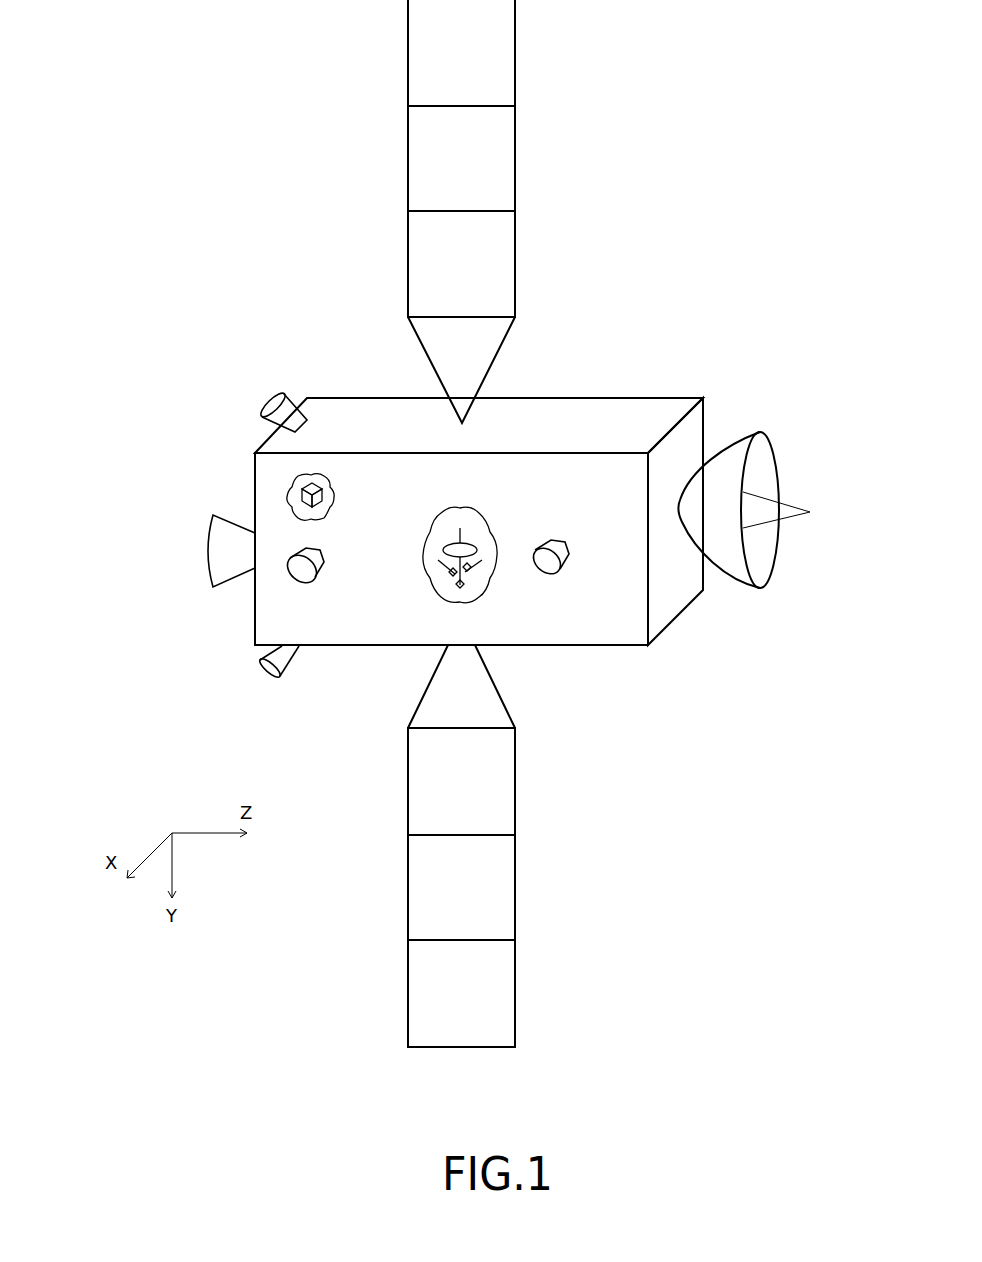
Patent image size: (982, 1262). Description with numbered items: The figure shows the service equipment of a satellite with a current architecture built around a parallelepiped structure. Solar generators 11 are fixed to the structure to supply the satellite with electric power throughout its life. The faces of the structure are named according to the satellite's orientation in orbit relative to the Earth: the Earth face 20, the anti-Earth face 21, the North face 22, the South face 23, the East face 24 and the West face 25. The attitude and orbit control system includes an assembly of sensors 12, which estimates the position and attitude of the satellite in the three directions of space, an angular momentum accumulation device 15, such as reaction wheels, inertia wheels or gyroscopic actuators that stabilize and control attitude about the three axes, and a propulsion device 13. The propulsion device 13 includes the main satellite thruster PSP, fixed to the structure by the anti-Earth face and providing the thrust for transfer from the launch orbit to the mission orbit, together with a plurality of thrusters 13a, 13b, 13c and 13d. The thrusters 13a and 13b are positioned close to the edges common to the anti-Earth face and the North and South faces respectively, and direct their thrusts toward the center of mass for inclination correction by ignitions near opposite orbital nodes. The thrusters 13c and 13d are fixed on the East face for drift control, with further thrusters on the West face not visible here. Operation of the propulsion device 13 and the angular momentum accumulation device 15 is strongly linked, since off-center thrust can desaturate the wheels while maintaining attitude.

The solar generators 11 is at (495, 157).
The assembly of sensors 12 is at (333, 508).
The propulsion device 13 is at (155, 683).
The thruster 13a is at (273, 400).
The thruster 13b is at (263, 657).
The thruster 13c is at (290, 570).
The thruster 13d is at (543, 570).
The angular momentum accumulation device 15 is at (480, 535).
The Earth face 20 is at (479, 520).
The anti-Earth face 21 is at (252, 493).
The North face 22 is at (546, 417).
The South face 23 is at (558, 645).
The East face 24 is at (400, 623).
The West face 25 is at (705, 432).
The main satellite thruster PSP is at (217, 547).